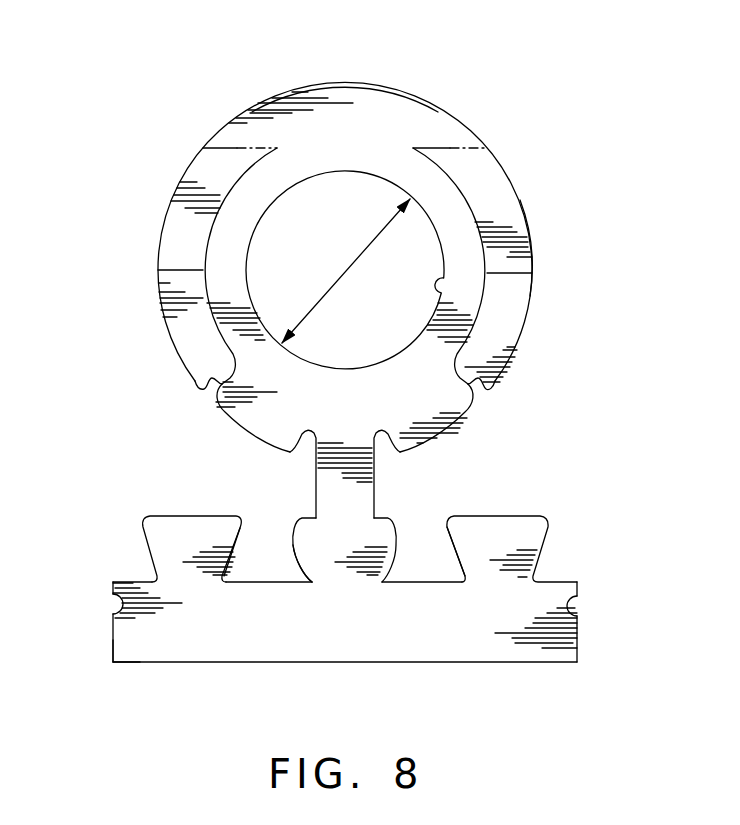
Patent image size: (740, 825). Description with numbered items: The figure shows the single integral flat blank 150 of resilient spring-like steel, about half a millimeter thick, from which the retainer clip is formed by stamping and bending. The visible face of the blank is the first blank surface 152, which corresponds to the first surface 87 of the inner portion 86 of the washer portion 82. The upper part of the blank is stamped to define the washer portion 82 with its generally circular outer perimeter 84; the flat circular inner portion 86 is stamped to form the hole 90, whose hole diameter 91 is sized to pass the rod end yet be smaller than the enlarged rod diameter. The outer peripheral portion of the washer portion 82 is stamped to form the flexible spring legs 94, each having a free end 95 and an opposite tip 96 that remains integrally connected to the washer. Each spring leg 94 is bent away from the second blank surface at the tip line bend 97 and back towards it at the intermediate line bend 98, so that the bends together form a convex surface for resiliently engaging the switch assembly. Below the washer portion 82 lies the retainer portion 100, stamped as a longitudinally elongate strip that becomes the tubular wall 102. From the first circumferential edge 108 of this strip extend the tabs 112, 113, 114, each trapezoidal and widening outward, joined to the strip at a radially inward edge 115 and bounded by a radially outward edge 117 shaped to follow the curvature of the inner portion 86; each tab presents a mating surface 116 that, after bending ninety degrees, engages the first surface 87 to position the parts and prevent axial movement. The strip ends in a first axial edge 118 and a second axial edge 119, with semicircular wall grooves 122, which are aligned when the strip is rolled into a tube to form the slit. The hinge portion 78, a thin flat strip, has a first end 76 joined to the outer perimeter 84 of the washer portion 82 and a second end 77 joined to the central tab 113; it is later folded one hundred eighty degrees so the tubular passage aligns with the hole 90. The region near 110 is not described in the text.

The first end 76 is at (342, 436).
The second end 77 is at (347, 553).
The hinge portion 78 is at (367, 492).
The washer portion 82 is at (389, 103).
The outer perimeter 84 is at (297, 86).
The inner portion 86 is at (459, 205).
The first surface 87 is at (468, 254).
The hole 90 is at (445, 297).
The hole diameter 91 is at (346, 271).
The flexible spring legs 94 is at (168, 223).
The free end 95 is at (212, 382).
The tip 96 is at (220, 158).
The tip line bend 97 is at (232, 147).
The intermediate line bend 98 is at (178, 270).
The retainer portion 100 is at (499, 657).
The tubular wall 102 is at (229, 660).
The first circumferential edge 108 is at (130, 578).
The lower left corner 110 is at (143, 660).
The tab 112 is at (149, 526).
The central tab 113 is at (300, 519).
The tab 114 is at (527, 528).
The radially inward edge 115 is at (198, 583).
The mating surface 116 is at (228, 540).
The radially outward edge 117 is at (160, 533).
The first axial edge 118 is at (577, 642).
The second axial edge 119 is at (112, 648).
The semicircular wall grooves 122 is at (120, 601).
The blank 150 is at (600, 222).
The first blank surface 152 is at (346, 132).